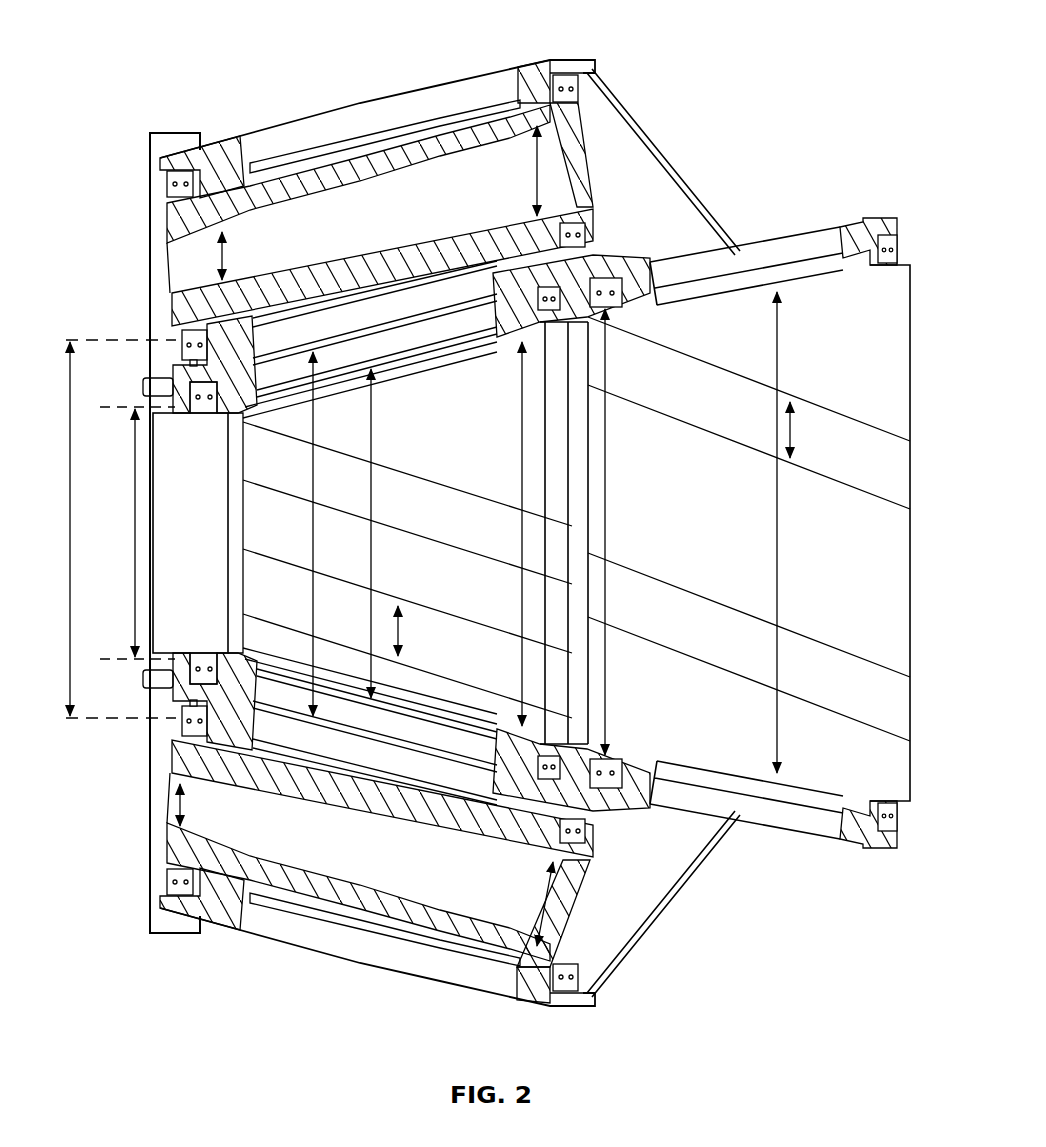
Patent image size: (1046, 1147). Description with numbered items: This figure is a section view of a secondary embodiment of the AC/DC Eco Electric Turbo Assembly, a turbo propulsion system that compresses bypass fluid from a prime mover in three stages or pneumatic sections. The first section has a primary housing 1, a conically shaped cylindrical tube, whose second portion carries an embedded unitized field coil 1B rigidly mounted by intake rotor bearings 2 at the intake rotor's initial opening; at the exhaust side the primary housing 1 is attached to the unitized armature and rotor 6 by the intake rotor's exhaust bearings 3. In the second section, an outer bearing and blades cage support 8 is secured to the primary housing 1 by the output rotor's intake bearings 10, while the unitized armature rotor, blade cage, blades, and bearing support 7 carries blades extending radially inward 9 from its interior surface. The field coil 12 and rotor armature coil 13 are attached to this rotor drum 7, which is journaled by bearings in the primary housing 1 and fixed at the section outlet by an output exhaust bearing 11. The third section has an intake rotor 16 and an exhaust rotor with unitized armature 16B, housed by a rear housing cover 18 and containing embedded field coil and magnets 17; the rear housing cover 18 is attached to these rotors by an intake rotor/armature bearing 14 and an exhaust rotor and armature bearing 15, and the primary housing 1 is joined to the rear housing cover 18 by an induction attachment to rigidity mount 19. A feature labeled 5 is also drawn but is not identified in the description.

The primary housing 1 is at (886, 210).
The embedded unitized field coil 1B is at (816, 246).
The intake rotor bearings 2 is at (902, 249).
The intake rotor's exhaust bearings 3 is at (610, 352).
The spacing 5 is at (793, 430).
The unitized armature and rotor 6 is at (778, 580).
The unitized armature rotor, blade cage, blades, and bearing support 7 is at (520, 540).
The outer bearing and blades cage support 8 is at (565, 438).
The blades 9 is at (400, 630).
The output rotor's intake bearings 10 is at (530, 290).
The output exhaust bearing 11 is at (133, 545).
The field coil 12 is at (313, 608).
The rotor armature coil 13 is at (372, 410).
The intake rotor/armature bearing 14 is at (592, 236).
The exhaust rotor and armature bearing 15 is at (70, 540).
The intake rotor 16 is at (537, 175).
The exhaust rotor with unitized armature 16B is at (223, 262).
The embedded field coil and magnets 17 is at (333, 150).
The rear housing cover 18 is at (178, 146).
The induction attachment to rigidity mount 19 is at (676, 154).